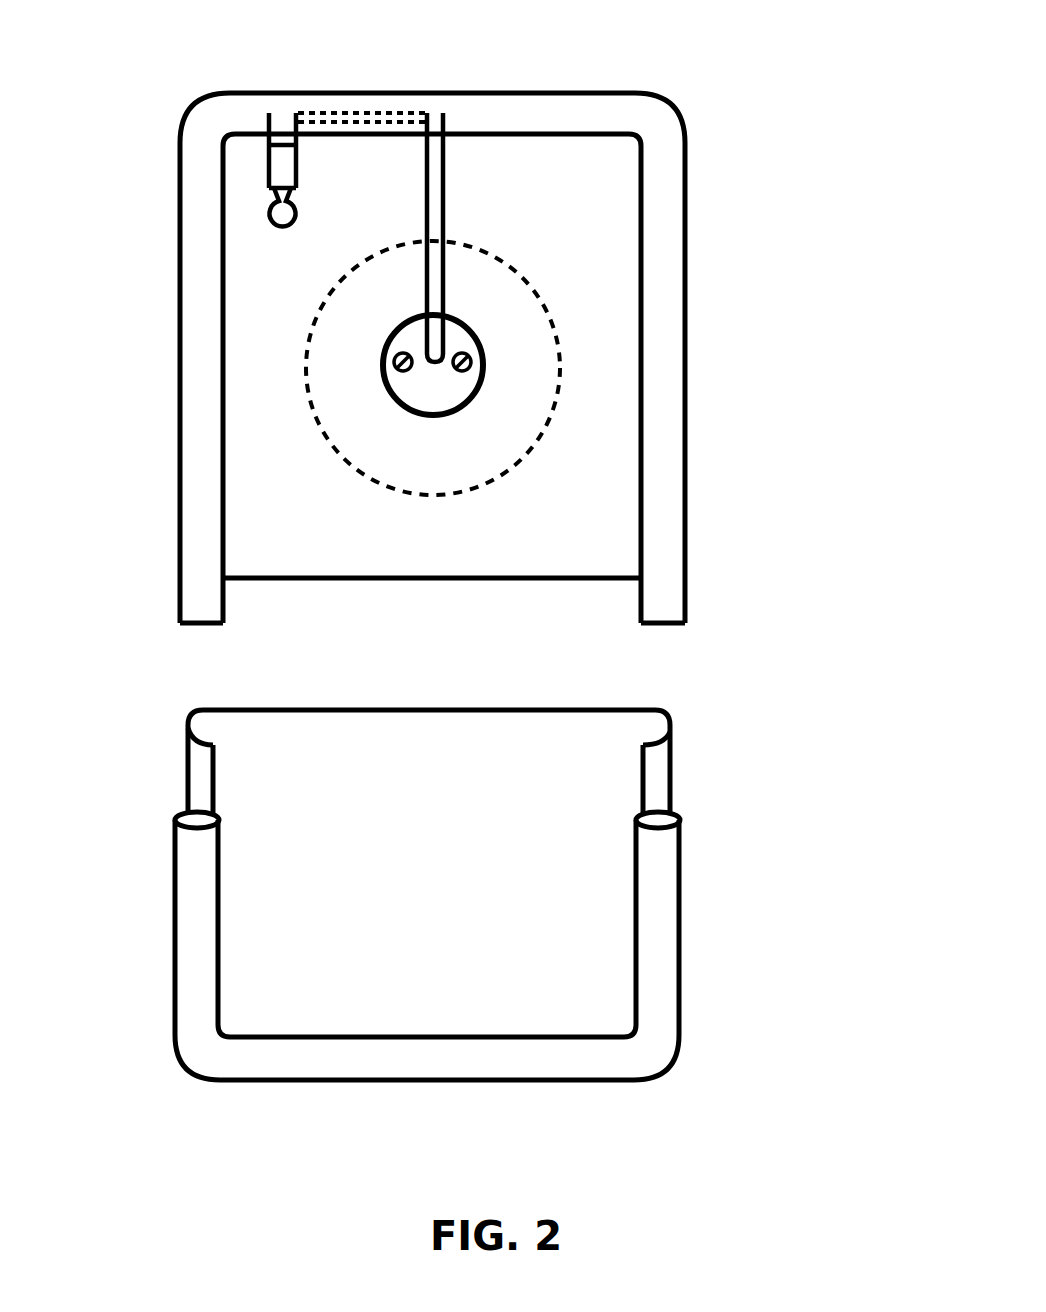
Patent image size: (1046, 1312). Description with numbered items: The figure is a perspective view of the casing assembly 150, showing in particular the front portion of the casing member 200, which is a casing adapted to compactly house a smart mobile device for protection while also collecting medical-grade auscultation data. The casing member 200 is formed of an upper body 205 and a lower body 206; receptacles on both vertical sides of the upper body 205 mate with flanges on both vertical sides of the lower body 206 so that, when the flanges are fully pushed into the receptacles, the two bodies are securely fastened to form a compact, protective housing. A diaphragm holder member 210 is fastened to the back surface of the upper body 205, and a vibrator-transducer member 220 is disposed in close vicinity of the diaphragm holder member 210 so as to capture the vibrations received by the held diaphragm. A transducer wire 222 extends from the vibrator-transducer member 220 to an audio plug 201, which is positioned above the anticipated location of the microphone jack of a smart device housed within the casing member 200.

The casing assembly 150 is at (788, 44).
The casing member 200 is at (175, 893).
The audio plug 201 is at (269, 169).
The upper body 205 is at (670, 539).
The lower body 206 is at (662, 920).
The diaphragm holder member 210 is at (495, 463).
The vibrator-transducer member 220 is at (432, 403).
The transducer wire 222 is at (443, 271).